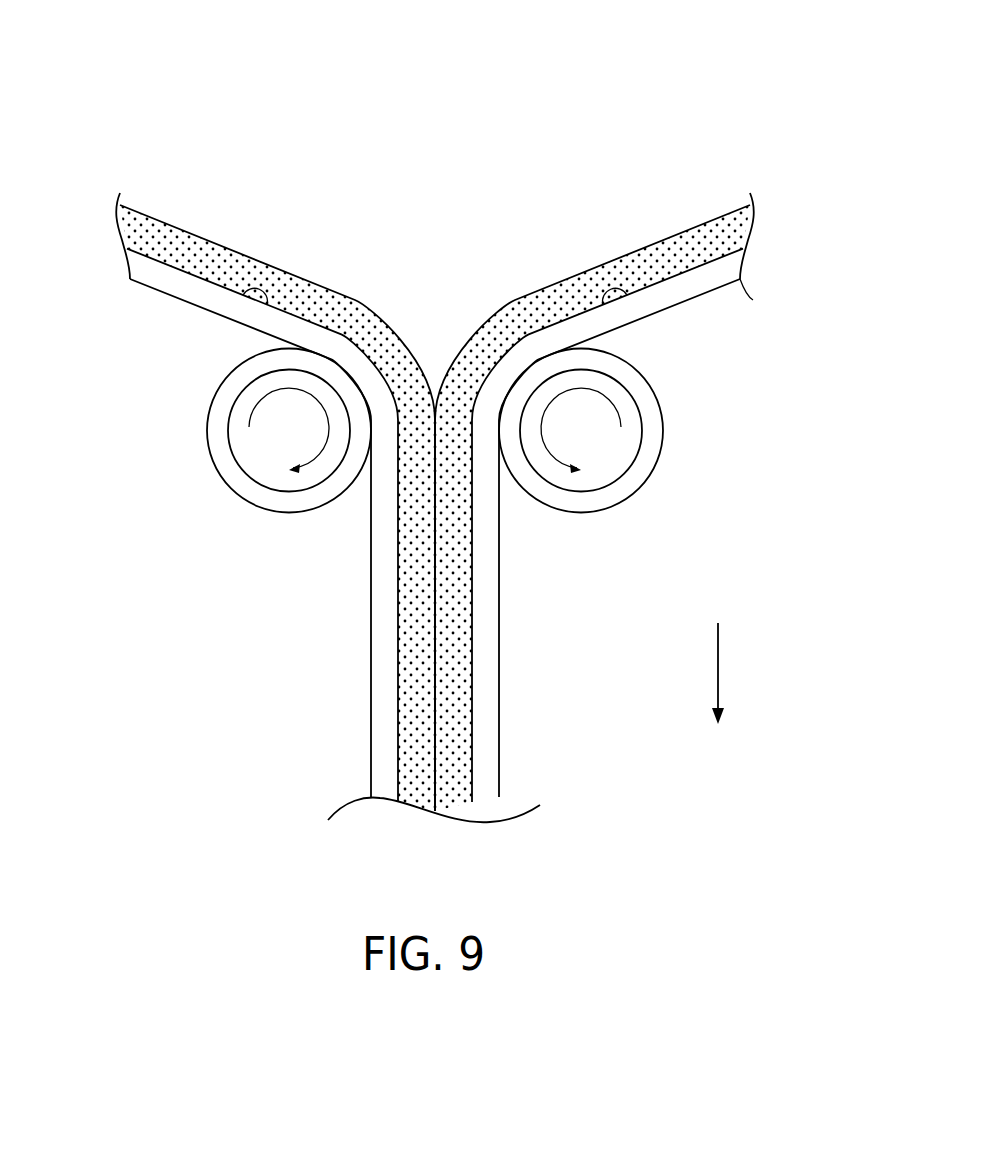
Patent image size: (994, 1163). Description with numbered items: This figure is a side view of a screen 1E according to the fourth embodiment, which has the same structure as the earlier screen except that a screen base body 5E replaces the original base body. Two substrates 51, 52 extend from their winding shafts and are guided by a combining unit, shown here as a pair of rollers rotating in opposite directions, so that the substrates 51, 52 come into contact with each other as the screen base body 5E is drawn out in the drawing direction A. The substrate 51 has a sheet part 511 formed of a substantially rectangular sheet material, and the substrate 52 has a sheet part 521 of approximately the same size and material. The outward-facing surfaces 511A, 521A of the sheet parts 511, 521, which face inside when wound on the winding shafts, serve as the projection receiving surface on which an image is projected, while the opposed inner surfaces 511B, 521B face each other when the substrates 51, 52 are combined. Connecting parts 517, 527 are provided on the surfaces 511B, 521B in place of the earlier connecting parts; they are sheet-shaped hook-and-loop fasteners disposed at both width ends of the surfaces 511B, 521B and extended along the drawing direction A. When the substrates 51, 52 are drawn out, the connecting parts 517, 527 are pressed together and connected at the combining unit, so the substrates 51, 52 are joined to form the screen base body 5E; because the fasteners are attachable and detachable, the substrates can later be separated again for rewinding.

The screen 1E is at (443, 416).
The screen base body 5E is at (443, 446).
The substrate 51 is at (241, 441).
The substrate 52 is at (637, 458).
The sheet part 511 is at (209, 495).
The surface 511A is at (130, 279).
The surface 511B is at (241, 288).
The connecting part 517 is at (228, 267).
The sheet part 521 is at (669, 495).
The surface 521A is at (718, 288).
The surface 521B is at (624, 292).
The connecting part 527 is at (628, 266).
The drawing direction A is at (718, 670).